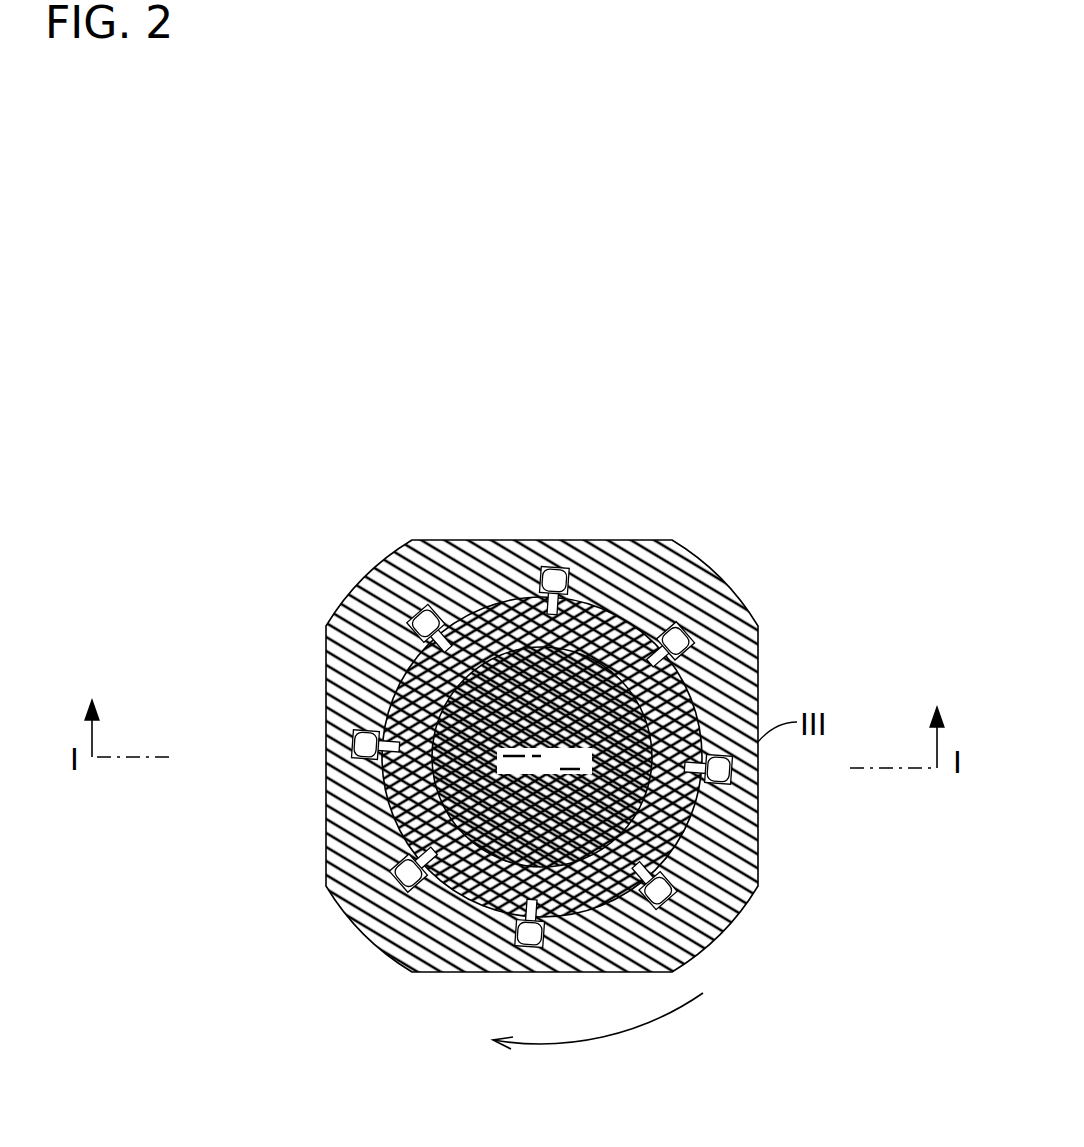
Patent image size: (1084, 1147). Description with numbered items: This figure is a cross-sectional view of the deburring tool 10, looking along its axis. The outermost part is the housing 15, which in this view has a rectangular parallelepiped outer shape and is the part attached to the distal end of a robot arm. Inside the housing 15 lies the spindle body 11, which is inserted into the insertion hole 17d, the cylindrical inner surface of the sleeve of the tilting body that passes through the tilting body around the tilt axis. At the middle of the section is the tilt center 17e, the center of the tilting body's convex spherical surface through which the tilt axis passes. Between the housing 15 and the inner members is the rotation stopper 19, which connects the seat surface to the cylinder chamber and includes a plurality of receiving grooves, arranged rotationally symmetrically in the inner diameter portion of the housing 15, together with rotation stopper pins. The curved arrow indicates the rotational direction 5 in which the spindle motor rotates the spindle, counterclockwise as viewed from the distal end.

The deburring tool 10 is at (852, 329).
The housing 15 is at (738, 593).
The spindle body 11 is at (390, 688).
The insertion hole 17d is at (387, 785).
The tilt center 17e is at (541, 764).
The rotation stopper 19 is at (542, 560).
The rotational direction 5 is at (588, 1040).